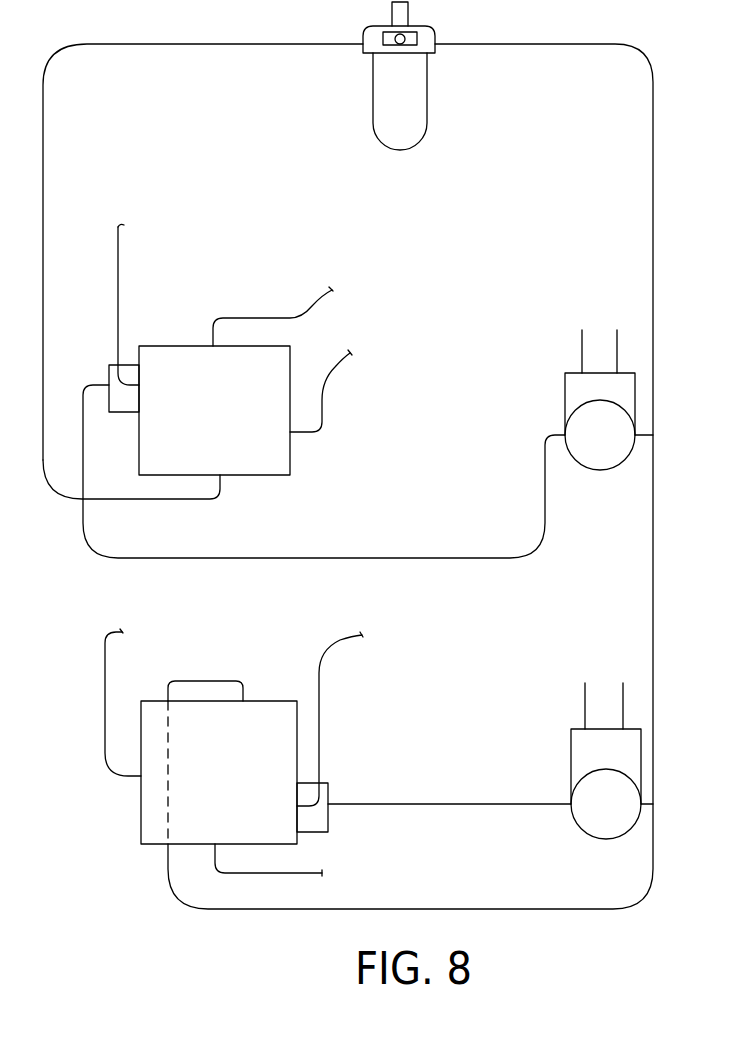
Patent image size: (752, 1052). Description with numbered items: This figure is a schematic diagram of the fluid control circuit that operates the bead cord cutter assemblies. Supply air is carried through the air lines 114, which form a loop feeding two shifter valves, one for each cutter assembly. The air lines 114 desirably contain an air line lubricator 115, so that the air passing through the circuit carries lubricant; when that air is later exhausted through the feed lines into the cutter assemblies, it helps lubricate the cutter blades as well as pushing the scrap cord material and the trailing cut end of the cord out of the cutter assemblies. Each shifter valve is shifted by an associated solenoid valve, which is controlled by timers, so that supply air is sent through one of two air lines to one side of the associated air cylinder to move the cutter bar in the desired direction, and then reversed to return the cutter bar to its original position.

The air line 114 is at (43, 240).
The air line lubricator 115 is at (412, 127).